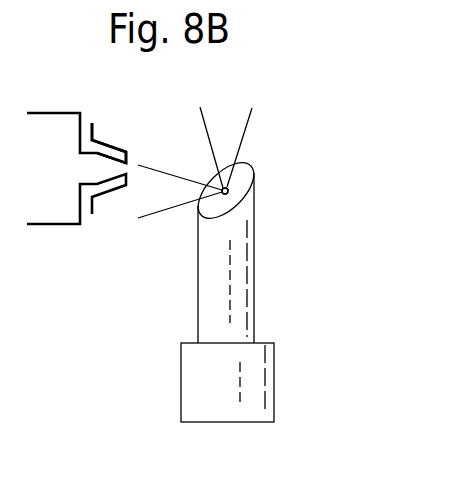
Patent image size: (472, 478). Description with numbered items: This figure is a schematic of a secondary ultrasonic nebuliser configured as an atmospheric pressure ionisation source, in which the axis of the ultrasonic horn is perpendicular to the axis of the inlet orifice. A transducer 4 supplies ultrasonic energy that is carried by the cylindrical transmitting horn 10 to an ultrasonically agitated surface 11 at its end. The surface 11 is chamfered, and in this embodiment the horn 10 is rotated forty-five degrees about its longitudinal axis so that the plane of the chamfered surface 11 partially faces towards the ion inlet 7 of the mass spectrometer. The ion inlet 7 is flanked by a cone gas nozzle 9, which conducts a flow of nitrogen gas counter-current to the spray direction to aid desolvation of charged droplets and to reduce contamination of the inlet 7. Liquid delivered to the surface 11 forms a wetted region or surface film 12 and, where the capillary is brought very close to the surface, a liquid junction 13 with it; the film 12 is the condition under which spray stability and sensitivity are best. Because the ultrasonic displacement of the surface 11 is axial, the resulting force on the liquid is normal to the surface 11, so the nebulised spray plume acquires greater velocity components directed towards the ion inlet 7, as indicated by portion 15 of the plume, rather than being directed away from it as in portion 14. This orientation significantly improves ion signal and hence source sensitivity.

The transducer 4 is at (255, 373).
The ion inlet orifice 7 is at (118, 168).
The cone gas nozzle 9 is at (107, 142).
The cylindrical transmitting horn 10 is at (213, 318).
The ultrasonically agitated surface 11 is at (237, 200).
The surface film 12 is at (229, 190).
The liquid junction 13 is at (225, 191).
The portion of the plume 14 is at (230, 118).
The portion of the plume 15 is at (160, 193).